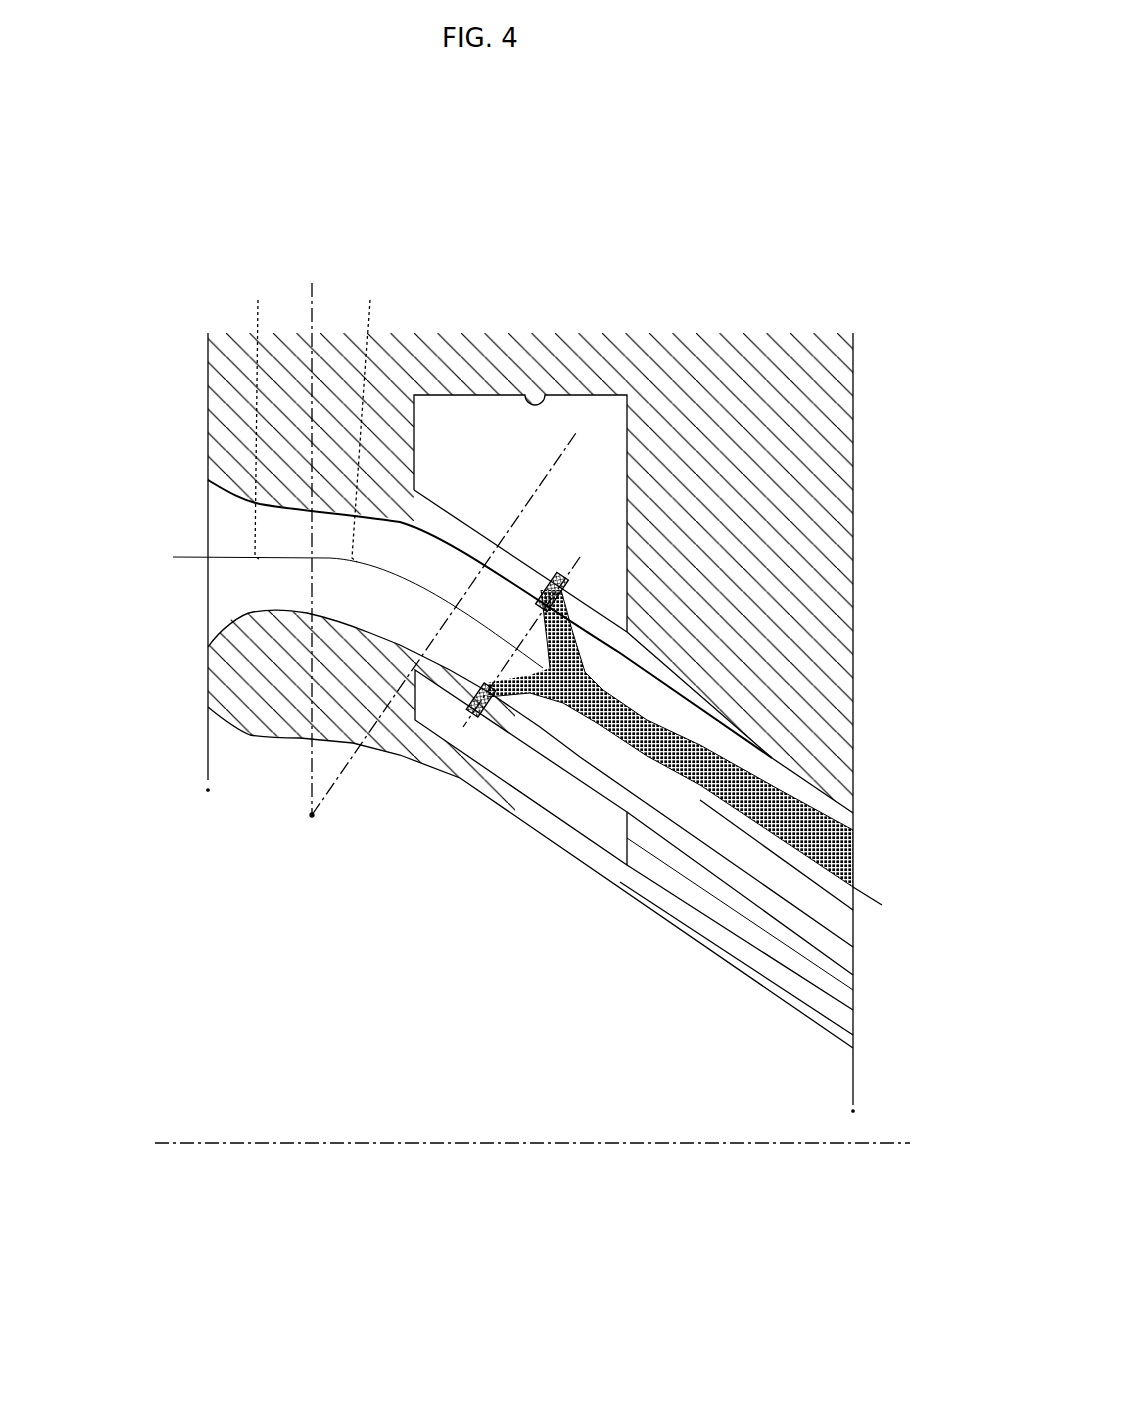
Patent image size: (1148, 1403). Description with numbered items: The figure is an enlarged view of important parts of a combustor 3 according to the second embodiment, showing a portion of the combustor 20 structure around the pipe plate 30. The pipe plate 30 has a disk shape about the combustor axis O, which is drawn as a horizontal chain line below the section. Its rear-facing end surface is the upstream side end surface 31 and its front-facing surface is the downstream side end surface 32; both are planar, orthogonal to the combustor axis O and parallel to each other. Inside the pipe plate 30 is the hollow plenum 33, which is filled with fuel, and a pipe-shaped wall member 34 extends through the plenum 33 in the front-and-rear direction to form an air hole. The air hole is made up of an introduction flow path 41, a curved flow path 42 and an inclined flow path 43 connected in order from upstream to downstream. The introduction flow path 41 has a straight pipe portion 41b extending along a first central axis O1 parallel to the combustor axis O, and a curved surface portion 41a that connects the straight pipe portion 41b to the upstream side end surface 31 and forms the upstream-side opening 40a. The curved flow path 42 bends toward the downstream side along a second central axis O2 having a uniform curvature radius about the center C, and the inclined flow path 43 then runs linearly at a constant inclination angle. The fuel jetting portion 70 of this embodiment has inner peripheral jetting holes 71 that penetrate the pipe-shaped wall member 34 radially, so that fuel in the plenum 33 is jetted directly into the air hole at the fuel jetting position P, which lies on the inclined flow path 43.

The turbine 3 is at (832, 260).
The casing assembly 20 is at (775, 284).
The pipe plate 30 is at (534, 681).
The upstream side end surface 31 is at (208, 404).
The downstream side end surface 32 is at (853, 416).
The plenum 33 is at (535, 386).
The pipe-shaped wall member 34 is at (566, 750).
The upstream-side opening 40a is at (207, 517).
The introduction flow path 41 is at (456, 818).
The curved surface portion 41a is at (222, 616).
The straight pipe portion 41b is at (283, 610).
The curved flow path 42 is at (360, 613).
The inclined flow path 43 is at (714, 840).
The fuel jetting portion 70 is at (541, 601).
The inner peripheral jetting hole 71 is at (557, 562).
The center C is at (440, 567).
The fuel jetting position P is at (462, 728).
The combustor axis O is at (683, 1147).
The first central axis O1 is at (261, 414).
The second central axis O2 is at (373, 419).